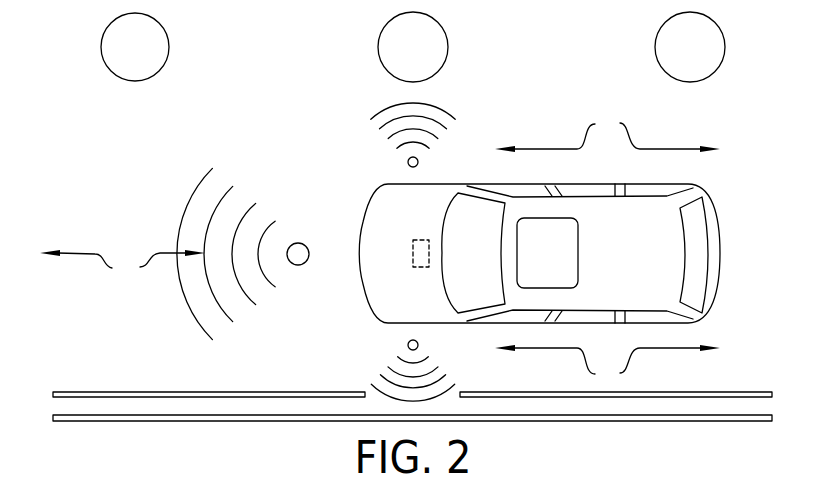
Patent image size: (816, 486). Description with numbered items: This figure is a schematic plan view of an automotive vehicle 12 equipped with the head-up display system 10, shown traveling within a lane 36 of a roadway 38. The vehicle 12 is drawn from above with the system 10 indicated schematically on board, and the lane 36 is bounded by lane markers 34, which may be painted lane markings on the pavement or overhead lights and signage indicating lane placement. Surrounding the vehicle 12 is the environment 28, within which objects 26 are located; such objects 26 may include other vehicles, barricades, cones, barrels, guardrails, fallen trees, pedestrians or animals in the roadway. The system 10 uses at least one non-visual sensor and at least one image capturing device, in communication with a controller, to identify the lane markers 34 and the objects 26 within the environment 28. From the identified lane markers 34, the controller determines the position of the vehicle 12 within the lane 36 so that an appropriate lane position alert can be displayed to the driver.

The head-up display system 10 is at (413, 253).
The automotive vehicle 12 is at (615, 264).
The objects 26 is at (123, 59).
The environment 28 is at (380, 250).
The lane markers 34 is at (680, 394).
The lane 36 is at (271, 354).
The roadway 38 is at (143, 218).